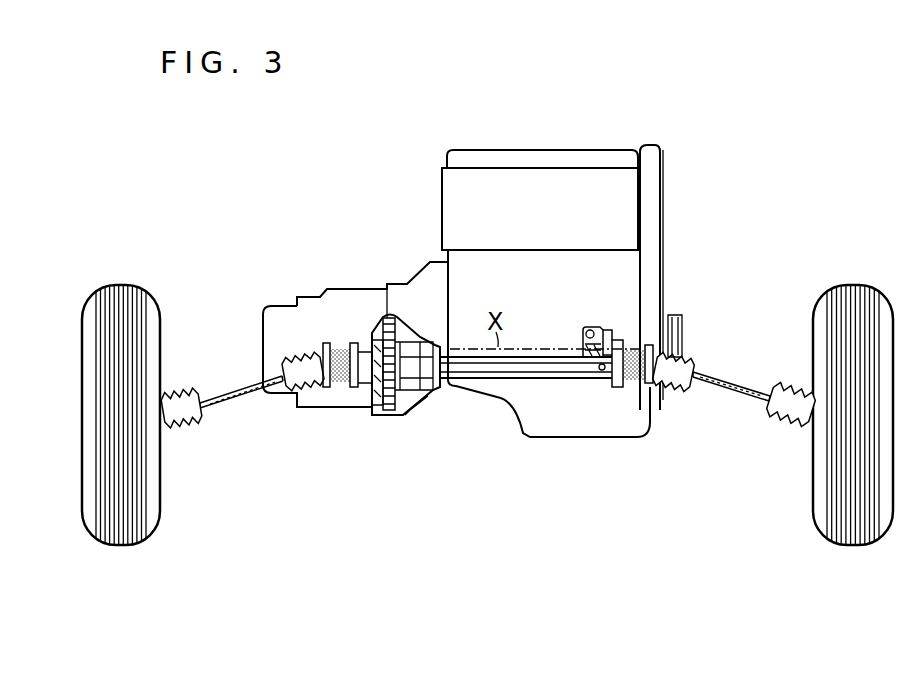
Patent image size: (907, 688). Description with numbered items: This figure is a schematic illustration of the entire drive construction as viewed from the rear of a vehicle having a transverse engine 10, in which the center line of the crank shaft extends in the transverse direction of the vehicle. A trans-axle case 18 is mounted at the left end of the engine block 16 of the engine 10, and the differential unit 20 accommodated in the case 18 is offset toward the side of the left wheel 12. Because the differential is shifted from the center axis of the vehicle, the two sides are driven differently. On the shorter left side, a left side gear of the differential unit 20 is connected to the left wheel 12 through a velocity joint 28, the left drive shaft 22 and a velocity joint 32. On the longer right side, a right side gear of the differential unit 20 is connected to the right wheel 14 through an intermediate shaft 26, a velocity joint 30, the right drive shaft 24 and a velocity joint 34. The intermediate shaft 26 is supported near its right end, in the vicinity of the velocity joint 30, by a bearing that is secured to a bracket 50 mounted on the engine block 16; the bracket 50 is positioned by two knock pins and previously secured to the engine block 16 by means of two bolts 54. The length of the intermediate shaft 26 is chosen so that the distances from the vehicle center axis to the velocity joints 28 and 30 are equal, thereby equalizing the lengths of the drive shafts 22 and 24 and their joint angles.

The transverse engine 10 is at (565, 149).
The left wheel 12 is at (120, 547).
The right wheel 14 is at (852, 547).
The engine block 16 is at (455, 268).
The trans-axle case 18 is at (397, 283).
The differential unit 20 is at (407, 402).
The left drive shaft 22 is at (224, 396).
The right drive shaft 24 is at (725, 384).
The intermediate shaft 26 is at (487, 366).
The velocity joint 28 is at (338, 388).
The velocity joint 30 is at (633, 386).
The velocity joint 32 is at (186, 430).
The velocity joint 34 is at (796, 431).
The bracket 50 is at (603, 325).
The bolts 54 is at (587, 328).